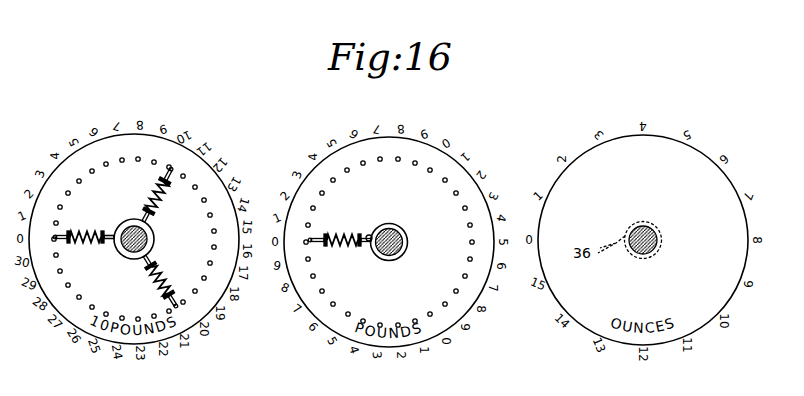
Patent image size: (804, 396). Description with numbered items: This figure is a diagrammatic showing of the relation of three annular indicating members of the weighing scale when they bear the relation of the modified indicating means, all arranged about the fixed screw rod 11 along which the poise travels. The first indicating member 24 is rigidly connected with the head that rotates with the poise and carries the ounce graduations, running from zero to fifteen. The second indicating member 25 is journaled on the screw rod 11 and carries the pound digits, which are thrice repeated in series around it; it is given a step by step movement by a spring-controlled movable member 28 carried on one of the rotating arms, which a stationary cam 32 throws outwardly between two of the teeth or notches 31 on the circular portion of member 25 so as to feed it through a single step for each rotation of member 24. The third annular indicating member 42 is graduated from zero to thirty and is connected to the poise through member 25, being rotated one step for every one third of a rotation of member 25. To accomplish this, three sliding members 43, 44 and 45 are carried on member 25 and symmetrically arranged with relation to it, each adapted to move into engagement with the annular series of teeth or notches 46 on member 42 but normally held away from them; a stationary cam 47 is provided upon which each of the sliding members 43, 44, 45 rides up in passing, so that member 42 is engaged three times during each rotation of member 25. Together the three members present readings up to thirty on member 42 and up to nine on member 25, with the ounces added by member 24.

The screw rod 11 is at (152, 247).
The indicating member 24 is at (663, 135).
The indicating member 25 is at (435, 145).
The movable member 28 is at (328, 234).
The teeth or notches 31 is at (461, 207).
The stationary cam 32 is at (371, 235).
The third annular indicating member 42 is at (180, 139).
The sliding member 43 is at (78, 232).
The sliding member 44 is at (162, 197).
The sliding member 45 is at (157, 283).
The teeth or notches 46 is at (212, 234).
The stationary cam 47 is at (116, 240).